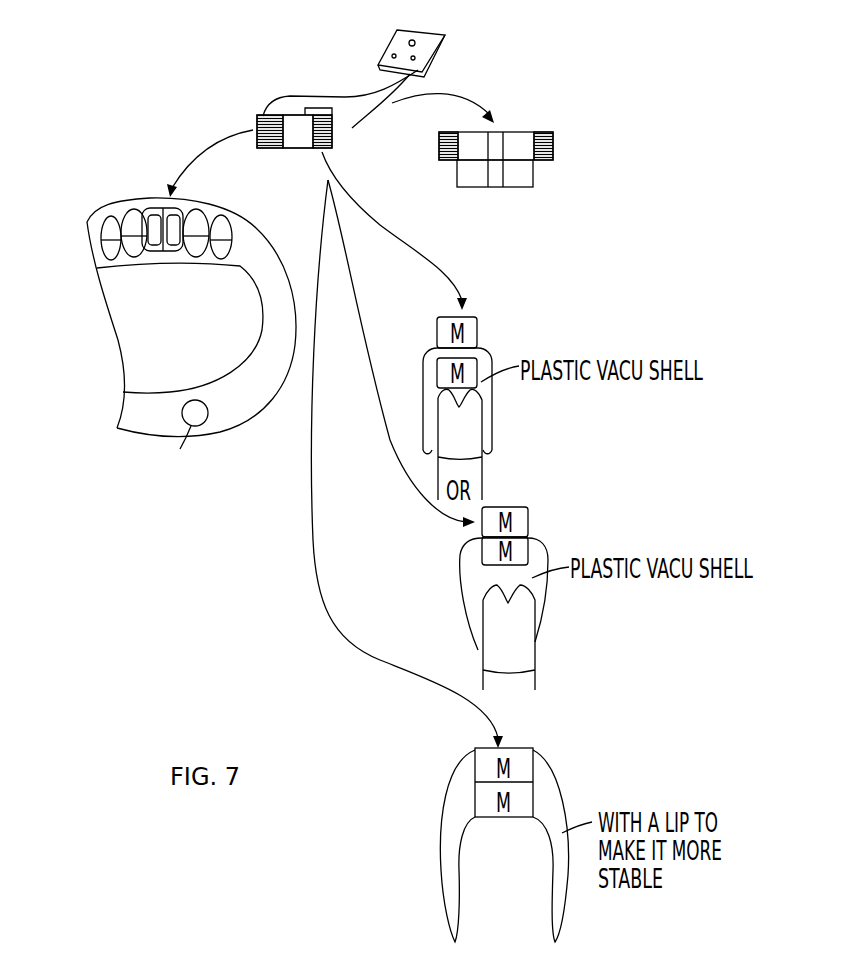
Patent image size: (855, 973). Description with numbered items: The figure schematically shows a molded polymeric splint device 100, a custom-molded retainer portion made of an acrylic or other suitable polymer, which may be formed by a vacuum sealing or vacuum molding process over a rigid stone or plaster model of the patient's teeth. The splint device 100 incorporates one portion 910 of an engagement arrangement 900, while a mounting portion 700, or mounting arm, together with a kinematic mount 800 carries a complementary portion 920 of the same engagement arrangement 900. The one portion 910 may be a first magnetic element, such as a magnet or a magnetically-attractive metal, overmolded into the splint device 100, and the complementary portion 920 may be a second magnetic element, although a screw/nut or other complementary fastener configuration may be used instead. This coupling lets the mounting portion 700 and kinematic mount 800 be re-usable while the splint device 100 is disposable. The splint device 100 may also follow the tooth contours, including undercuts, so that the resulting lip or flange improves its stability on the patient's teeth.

The splint device 100 is at (139, 180).
The mounting portion 700 is at (336, 76).
The kinematic mount 800 is at (411, 53).
The engagement arrangement 900 is at (526, 203).
The one portion of the engagement arrangement 910 is at (164, 260).
The complementary portion of the engagement arrangement 920 is at (286, 160).